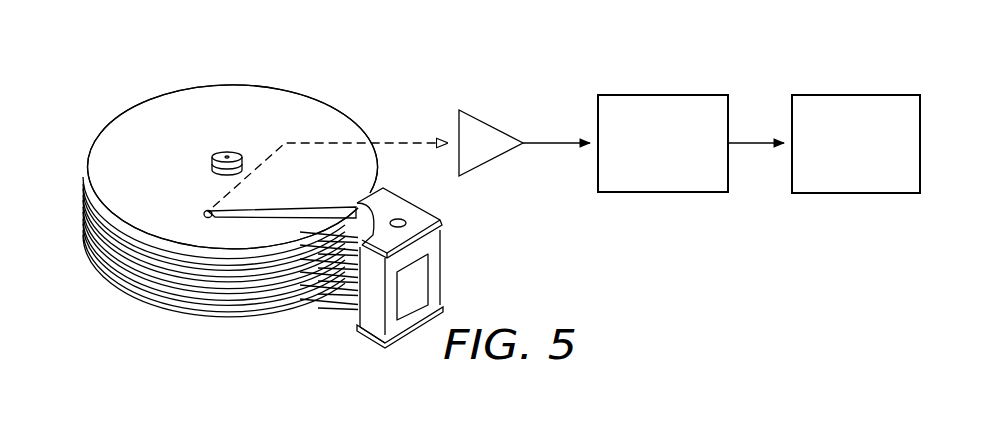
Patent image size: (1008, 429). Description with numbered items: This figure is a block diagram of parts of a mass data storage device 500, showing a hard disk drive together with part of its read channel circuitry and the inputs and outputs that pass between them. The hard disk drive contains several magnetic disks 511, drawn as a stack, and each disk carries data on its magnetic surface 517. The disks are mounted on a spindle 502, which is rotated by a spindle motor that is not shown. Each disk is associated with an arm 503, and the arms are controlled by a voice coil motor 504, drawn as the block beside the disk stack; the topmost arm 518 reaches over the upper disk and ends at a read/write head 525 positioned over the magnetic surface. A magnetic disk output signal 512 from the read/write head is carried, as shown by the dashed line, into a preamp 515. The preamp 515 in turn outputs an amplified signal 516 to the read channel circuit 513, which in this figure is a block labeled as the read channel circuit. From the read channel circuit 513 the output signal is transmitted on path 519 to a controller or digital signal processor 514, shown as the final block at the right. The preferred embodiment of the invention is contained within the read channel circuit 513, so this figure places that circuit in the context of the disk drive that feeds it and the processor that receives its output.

The mass data storage device 500 is at (328, 53).
The magnetic disks 511 is at (118, 123).
The magnetic surface 517 is at (195, 105).
The arm 503 is at (333, 311).
The spindle 502 is at (212, 162).
The actuator arm 518 is at (293, 214).
The read head 525 is at (204, 215).
The voice coil motor 504 is at (442, 268).
The magnetic disk output signal 512 is at (395, 141).
The preamp 515 is at (493, 167).
The amplified signal 516 is at (557, 141).
The read channel circuit 513 is at (652, 195).
The path 519 is at (750, 141).
The digital signal processor 514 is at (852, 195).